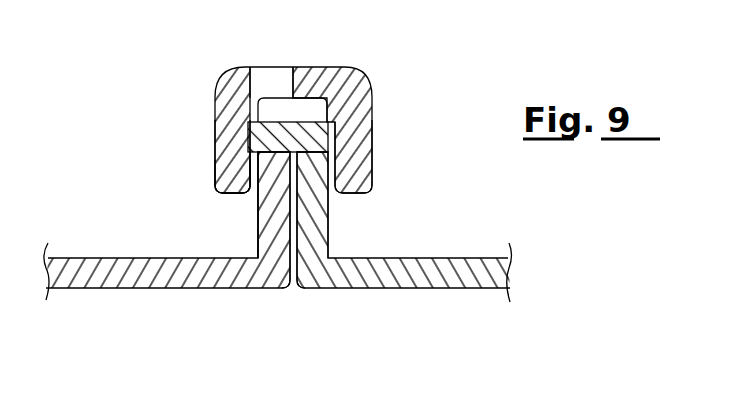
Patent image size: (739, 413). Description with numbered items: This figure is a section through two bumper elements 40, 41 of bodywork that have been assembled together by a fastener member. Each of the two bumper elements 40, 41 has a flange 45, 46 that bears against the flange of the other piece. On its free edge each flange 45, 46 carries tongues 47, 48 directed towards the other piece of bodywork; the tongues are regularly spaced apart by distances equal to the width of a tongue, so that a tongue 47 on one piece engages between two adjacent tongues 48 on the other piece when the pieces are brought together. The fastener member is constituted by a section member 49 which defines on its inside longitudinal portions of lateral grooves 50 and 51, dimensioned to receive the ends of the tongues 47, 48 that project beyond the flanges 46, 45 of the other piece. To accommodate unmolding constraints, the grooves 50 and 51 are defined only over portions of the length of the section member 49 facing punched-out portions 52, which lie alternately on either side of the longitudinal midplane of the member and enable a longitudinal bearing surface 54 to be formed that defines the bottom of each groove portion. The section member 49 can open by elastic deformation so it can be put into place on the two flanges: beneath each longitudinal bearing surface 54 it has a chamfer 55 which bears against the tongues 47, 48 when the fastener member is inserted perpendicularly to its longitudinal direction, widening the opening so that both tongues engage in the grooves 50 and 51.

The bumper element 40 is at (136, 300).
The bumper element 41 is at (441, 298).
The flange 45 is at (272, 232).
The flange 46 is at (310, 235).
The tongue 47 is at (258, 108).
The tongue 48 is at (327, 122).
The section member 49 is at (328, 68).
The lateral groove 50 is at (240, 148).
The lateral groove 51 is at (372, 144).
The punched-out portion 52 is at (272, 80).
The longitudinal bearing surface 54 is at (228, 163).
The chamfer 55 is at (249, 158).